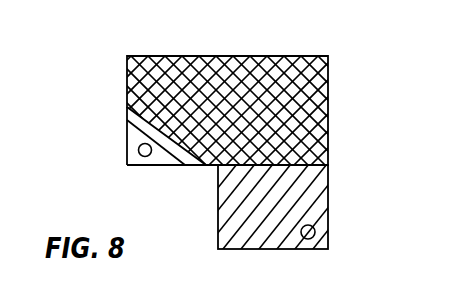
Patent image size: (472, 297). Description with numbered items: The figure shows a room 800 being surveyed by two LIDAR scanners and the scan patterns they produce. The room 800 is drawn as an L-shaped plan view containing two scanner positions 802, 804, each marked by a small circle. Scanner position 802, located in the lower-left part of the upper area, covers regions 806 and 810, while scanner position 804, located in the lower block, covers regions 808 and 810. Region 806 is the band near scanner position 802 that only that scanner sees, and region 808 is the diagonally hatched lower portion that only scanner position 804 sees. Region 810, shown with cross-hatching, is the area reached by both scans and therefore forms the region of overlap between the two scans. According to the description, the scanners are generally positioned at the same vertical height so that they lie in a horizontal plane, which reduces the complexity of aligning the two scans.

The room 800 is at (328, 96).
The scanner position 802 is at (140, 156).
The scanner position 804 is at (315, 231).
The region 806 is at (184, 165).
The region 808 is at (328, 180).
The region 810 is at (245, 56).